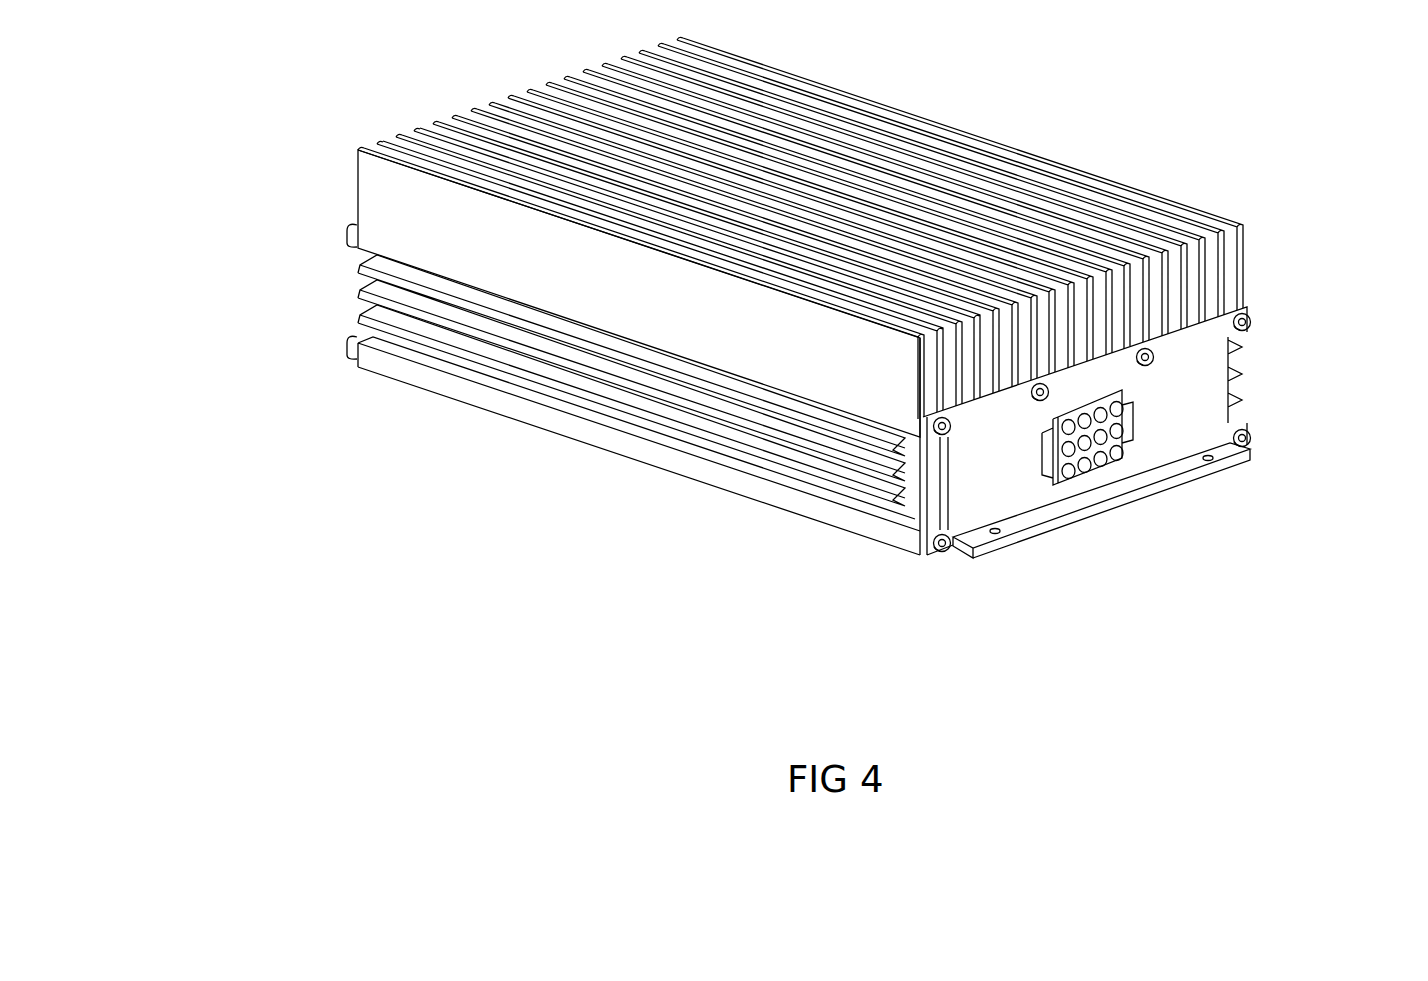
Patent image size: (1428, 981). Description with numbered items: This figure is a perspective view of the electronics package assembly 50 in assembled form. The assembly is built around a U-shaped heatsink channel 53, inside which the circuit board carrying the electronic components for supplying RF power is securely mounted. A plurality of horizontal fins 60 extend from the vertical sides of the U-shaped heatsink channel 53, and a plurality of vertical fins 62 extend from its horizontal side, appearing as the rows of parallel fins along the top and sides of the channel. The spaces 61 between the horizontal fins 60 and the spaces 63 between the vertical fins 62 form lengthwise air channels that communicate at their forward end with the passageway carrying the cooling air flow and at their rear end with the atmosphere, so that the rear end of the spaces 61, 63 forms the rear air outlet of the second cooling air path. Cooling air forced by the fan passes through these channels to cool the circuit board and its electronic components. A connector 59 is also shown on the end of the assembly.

The electronics package assembly 50 is at (328, 508).
The U-shaped heatsink channel 53 is at (390, 183).
The connector 59 is at (1085, 440).
The horizontal fins 60 is at (363, 283).
The spaces between the horizontal fins 61 is at (360, 310).
The vertical fins 62 is at (1200, 243).
The spaces between the vertical fins 63 is at (1228, 243).